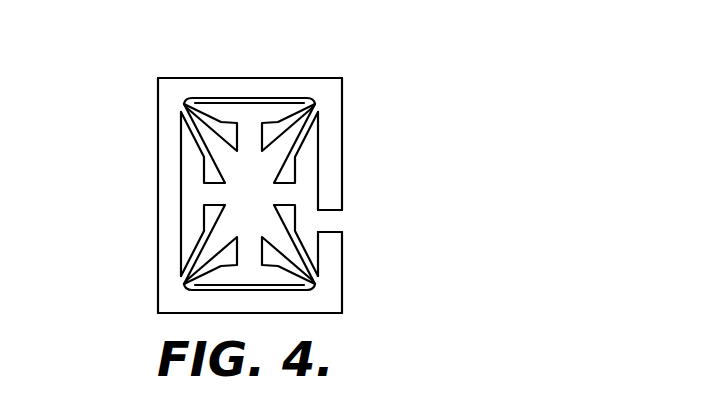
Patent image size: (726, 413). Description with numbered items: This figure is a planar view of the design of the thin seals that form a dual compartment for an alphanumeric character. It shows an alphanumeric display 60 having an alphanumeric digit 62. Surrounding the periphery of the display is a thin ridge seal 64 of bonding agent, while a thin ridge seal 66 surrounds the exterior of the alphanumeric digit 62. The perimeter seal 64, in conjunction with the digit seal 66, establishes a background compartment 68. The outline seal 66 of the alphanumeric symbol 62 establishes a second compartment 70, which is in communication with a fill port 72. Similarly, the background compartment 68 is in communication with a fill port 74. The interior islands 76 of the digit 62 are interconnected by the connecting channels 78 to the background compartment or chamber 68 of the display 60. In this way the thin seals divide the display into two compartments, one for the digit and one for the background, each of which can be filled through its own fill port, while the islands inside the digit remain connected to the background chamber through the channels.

The alphanumeric display 60 is at (108, 73).
The alphanumeric digit 62 is at (177, 140).
The thin ridge seal 64 is at (167, 314).
The thin ridge seal 66 is at (318, 142).
The background compartment 68 is at (262, 297).
The second compartment 70 is at (312, 171).
The fill port 72 is at (333, 229).
The fill port 74 is at (156, 257).
The interior islands 76 is at (206, 170).
The connecting channels 78 is at (198, 248).